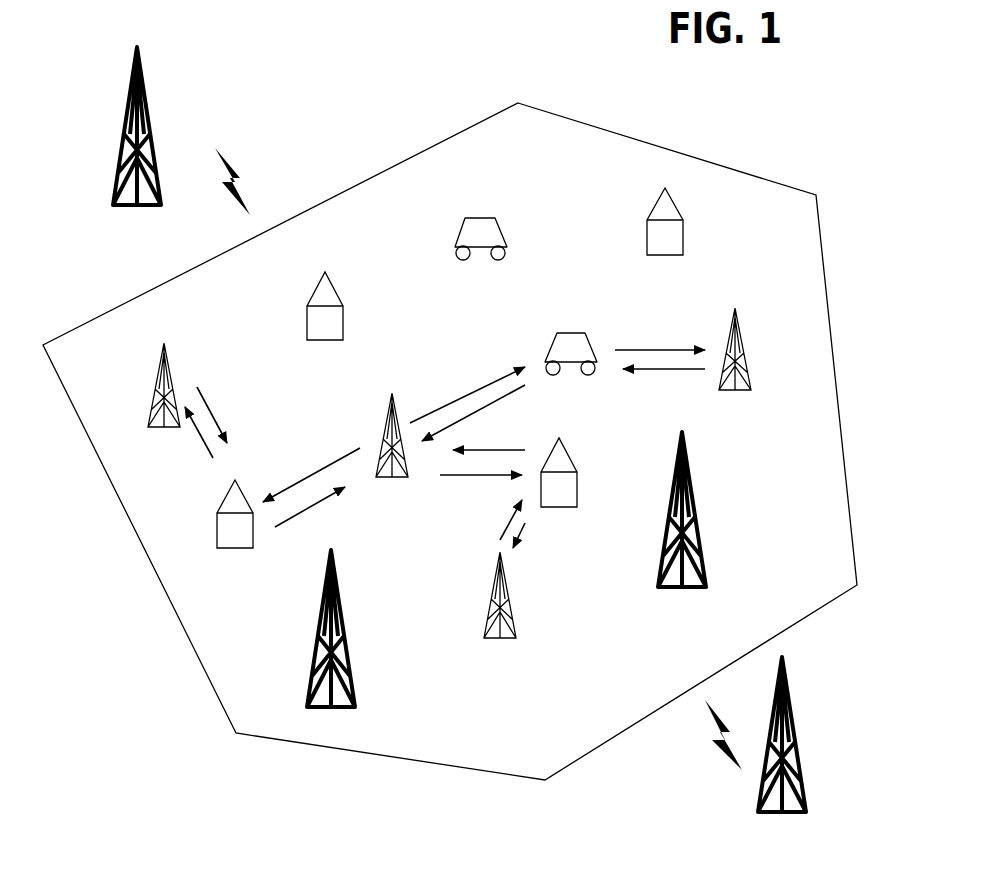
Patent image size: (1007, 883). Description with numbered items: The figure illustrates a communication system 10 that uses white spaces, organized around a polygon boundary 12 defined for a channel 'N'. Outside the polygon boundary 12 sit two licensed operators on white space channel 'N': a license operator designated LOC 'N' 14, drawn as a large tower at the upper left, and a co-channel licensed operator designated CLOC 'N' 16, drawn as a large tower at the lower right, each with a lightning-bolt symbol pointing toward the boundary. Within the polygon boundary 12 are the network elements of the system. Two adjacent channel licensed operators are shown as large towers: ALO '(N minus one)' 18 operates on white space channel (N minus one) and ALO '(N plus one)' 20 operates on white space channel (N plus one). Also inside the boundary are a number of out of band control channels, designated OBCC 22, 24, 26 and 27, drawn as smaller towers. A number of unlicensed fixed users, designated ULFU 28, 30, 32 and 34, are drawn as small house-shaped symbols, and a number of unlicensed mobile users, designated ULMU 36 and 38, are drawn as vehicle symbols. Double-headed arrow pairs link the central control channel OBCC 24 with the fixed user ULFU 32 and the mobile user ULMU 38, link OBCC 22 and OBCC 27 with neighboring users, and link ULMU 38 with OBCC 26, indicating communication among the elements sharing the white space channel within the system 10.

The communication system 10 is at (858, 59).
The polygon boundary 12 is at (450, 441).
The license operator LOC 'N' 14 is at (164, 146).
The co-channel licensed operator CLOC 'N' 16 is at (809, 757).
The adjacent channel licensed operator ALO '(N-1)' 18 is at (368, 646).
The adjacent channel licensed operator ALO '(N+1)' 20 is at (691, 528).
The out of band control channel OBCC 22 is at (190, 393).
The out of band control channel OBCC 24 is at (419, 435).
The out of band control channel OBCC 26 is at (763, 364).
The out of band control channel OBCC 27 is at (529, 607).
The unlicensed fixed user ULFU 28 is at (355, 307).
The unlicensed fixed user ULFU 30 is at (705, 237).
The unlicensed fixed user ULFU 32 is at (262, 516).
The unlicensed fixed user ULFU 34 is at (592, 480).
The unlicensed mobile user ULMU 36 is at (513, 242).
The unlicensed mobile user ULMU 38 is at (607, 353).